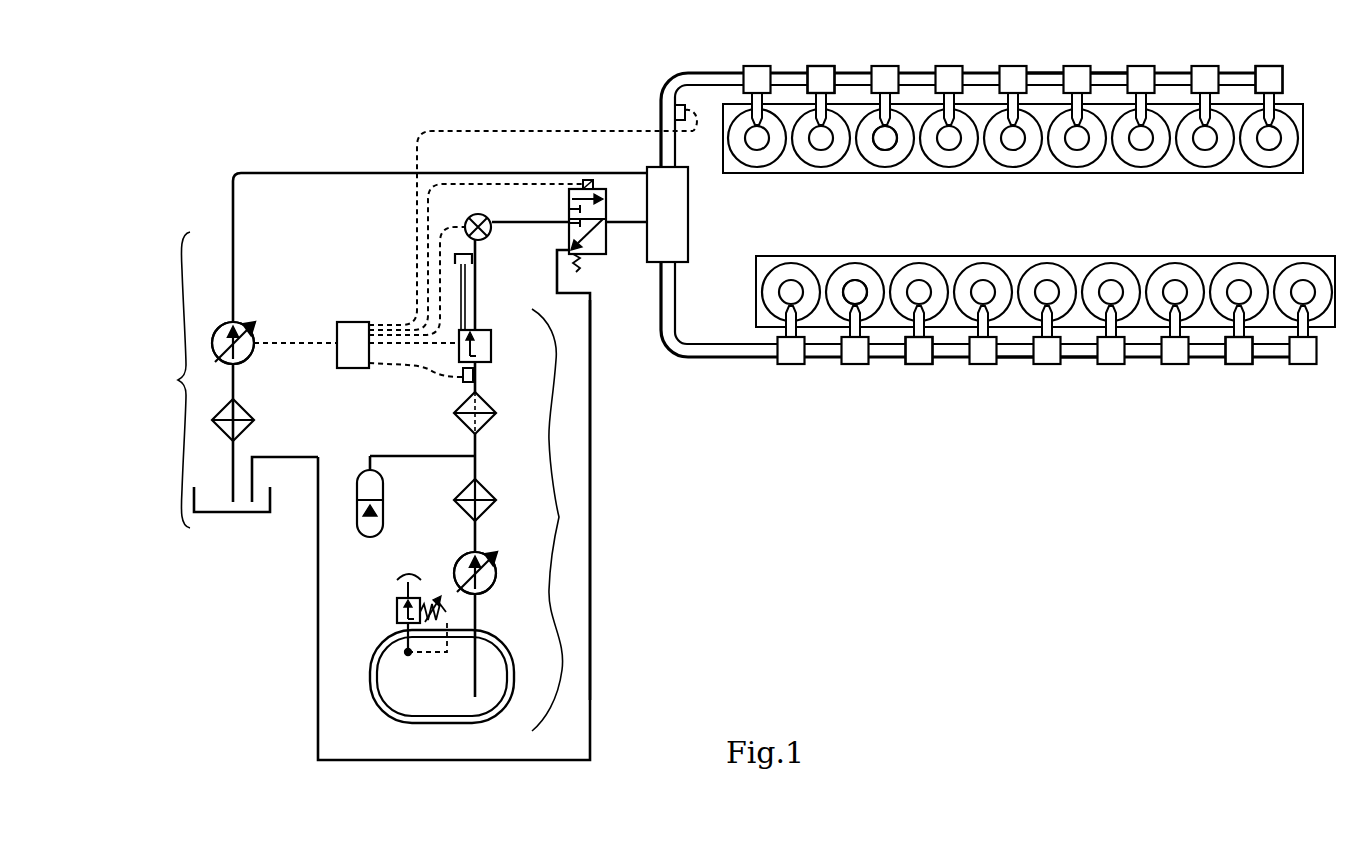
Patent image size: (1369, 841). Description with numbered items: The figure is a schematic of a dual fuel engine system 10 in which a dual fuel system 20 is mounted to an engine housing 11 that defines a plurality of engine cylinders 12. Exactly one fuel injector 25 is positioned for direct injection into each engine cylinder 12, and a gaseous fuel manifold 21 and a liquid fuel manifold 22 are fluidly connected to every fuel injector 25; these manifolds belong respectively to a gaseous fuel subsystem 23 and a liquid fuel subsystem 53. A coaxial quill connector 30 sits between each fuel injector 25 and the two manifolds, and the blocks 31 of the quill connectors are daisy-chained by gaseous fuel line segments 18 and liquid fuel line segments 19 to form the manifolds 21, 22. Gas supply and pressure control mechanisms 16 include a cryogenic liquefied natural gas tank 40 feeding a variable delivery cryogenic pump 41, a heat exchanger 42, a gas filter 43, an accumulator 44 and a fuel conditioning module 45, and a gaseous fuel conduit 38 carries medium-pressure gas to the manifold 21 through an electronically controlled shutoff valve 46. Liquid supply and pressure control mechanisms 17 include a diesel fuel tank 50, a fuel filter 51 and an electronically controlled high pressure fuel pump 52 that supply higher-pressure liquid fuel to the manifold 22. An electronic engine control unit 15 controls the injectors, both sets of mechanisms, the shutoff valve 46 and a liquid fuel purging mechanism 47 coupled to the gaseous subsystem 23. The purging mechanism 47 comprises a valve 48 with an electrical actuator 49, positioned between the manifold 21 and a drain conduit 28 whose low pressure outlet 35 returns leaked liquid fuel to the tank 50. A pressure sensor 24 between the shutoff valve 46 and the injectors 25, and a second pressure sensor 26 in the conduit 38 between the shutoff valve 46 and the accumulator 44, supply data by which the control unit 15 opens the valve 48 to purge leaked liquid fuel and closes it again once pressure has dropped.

The dual fuel engine system 10 is at (1029, 215).
The engine housing 11 is at (1207, 174).
The engine cylinder 12 is at (805, 160).
The electronic engine control unit 15 is at (352, 322).
The gas supply and pressure control mechanisms 16 is at (557, 520).
The liquid supply and pressure control mechanisms 17 is at (168, 380).
The gaseous fuel line segment 18 is at (1042, 88).
The liquid fuel line segment 19 is at (1108, 80).
The dual fuel system 20 is at (987, 43).
The gaseous fuel manifold 21 is at (853, 83).
The liquid fuel manifold 22 is at (1042, 80).
The gaseous fuel subsystem 23 is at (614, 630).
The pressure sensor 24 is at (686, 104).
The fuel injector 25 is at (893, 145).
The second pressure sensor 26 is at (463, 378).
The drain conduit 28 is at (592, 340).
The coaxial quill connector 30 is at (885, 63).
The block 31 is at (820, 65).
The low pressure outlet 35 is at (260, 503).
The gaseous fuel conduit 38 is at (531, 222).
The cryogenic liquefied natural gas tank 40 is at (515, 675).
The variable delivery cryogenic pump 41 is at (496, 585).
The heat exchanger 42 is at (496, 500).
The gas filter 43 is at (496, 413).
The accumulator 44 is at (384, 490).
The fuel conditioning module 45 is at (492, 343).
The shutoff valve 46 is at (492, 231).
The liquid fuel purging mechanism 47 is at (609, 233).
The valve 48 is at (607, 238).
The electrical actuator 49 is at (594, 184).
The diesel fuel tank 50 is at (272, 488).
The fuel filter 51 is at (254, 418).
The high pressure fuel pump 52 is at (254, 346).
The liquid fuel subsystem 53 is at (225, 205).